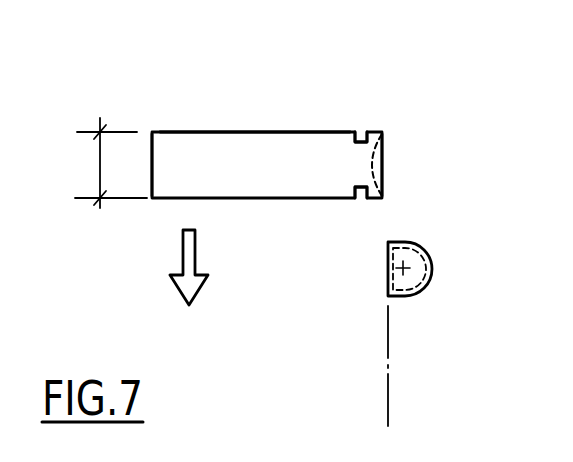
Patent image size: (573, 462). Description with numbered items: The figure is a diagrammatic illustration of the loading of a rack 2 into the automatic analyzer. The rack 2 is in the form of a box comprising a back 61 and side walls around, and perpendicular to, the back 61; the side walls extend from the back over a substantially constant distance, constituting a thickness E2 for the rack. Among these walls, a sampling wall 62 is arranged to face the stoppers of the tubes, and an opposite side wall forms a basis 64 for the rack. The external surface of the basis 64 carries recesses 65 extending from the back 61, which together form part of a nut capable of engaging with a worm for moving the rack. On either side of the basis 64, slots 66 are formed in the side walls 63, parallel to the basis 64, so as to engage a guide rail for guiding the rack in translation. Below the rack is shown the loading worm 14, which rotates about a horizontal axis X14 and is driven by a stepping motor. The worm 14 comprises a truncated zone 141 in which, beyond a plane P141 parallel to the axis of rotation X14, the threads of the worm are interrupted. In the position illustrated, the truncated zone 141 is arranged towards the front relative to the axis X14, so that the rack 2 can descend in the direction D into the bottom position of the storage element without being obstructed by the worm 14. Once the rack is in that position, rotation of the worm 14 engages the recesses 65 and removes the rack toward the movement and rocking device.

The rack 2 is at (274, 118).
The back 61 is at (212, 132).
The sampling wall 62 is at (152, 165).
The side wall 63 is at (282, 178).
The basis 64 is at (383, 173).
The recesses 65 is at (380, 158).
The slots 66 is at (361, 133).
The loading worm 14 is at (424, 252).
The axis of the worm X14 is at (408, 267).
The truncated zone 141 is at (388, 268).
The plane P141 is at (390, 390).
The thickness E2 is at (99, 163).
The direction of descent D is at (190, 248).